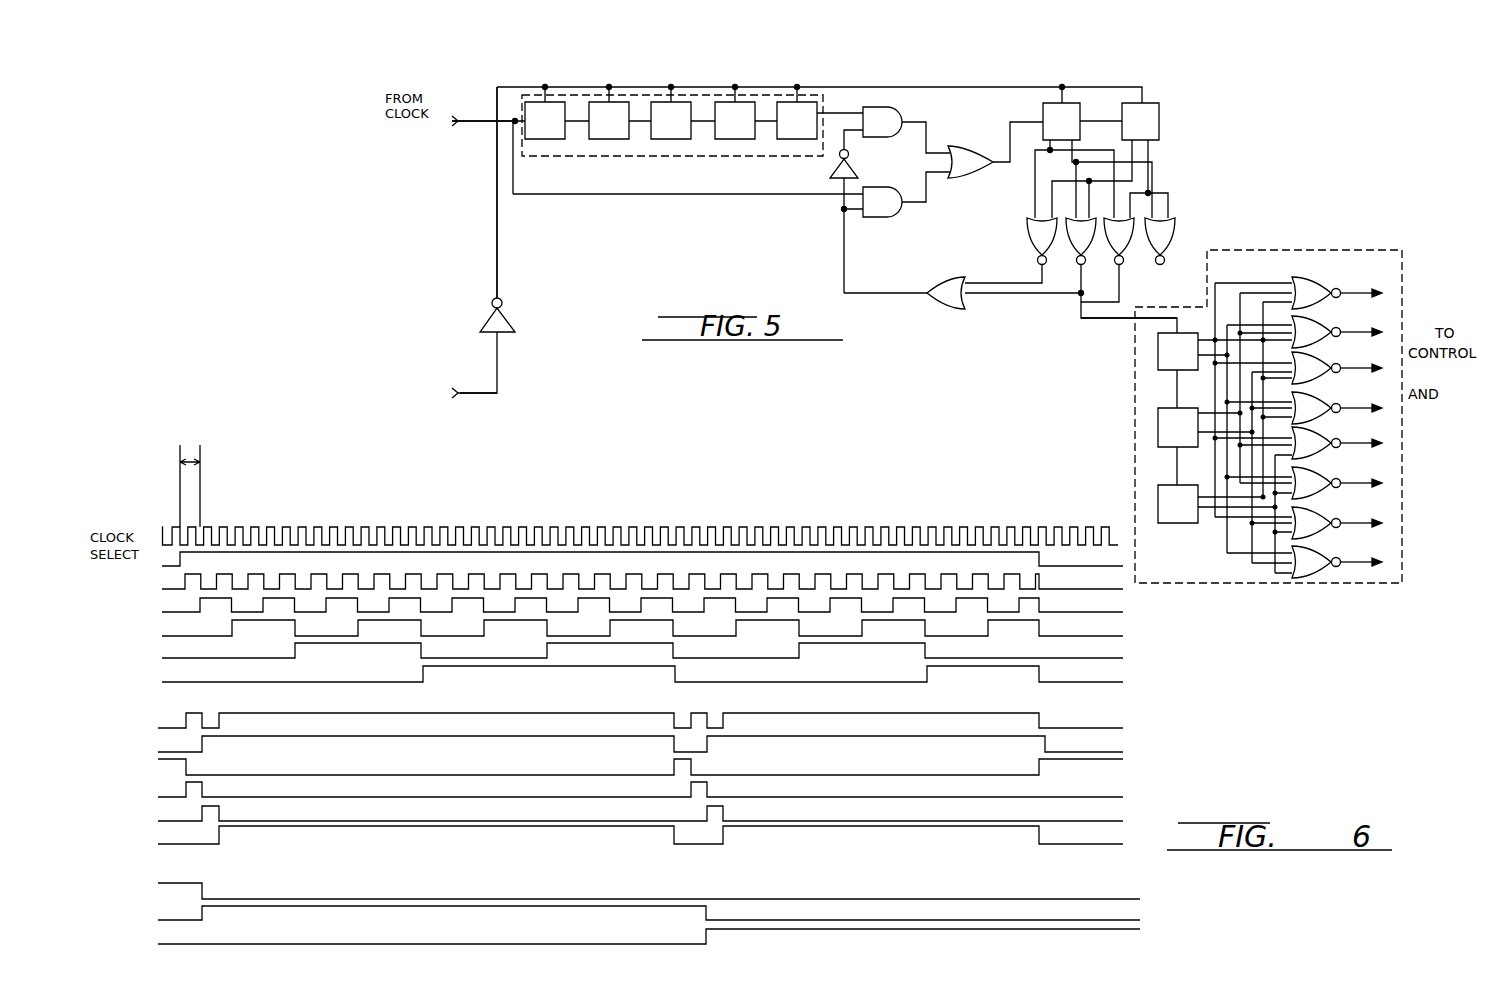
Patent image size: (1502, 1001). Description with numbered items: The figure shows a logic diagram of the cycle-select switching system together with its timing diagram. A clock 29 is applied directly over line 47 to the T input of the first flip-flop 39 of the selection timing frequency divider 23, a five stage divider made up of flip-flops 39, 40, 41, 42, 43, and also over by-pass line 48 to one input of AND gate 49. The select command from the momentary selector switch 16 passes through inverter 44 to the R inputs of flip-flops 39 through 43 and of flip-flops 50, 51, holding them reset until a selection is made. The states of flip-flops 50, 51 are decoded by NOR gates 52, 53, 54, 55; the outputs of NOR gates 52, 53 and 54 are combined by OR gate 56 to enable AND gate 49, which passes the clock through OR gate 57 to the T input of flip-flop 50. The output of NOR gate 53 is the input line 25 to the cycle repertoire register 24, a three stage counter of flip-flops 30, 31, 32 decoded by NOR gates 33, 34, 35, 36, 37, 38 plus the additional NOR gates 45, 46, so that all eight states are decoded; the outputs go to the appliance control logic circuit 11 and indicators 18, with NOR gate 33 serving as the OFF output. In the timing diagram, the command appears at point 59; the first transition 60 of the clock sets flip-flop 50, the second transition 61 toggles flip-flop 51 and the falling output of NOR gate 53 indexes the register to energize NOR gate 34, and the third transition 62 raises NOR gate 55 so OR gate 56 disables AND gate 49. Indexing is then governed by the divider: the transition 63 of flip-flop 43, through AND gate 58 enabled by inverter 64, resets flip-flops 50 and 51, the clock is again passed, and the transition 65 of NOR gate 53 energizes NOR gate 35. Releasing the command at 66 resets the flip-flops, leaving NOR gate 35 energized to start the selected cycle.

In FIG. 5, the appliance control logic circuit 11 is at (1449, 373).
In FIG. 5, the momentary selector switch 16 is at (372, 383).
In FIG. 5, the indicators 18 is at (1447, 426).
In FIG. 5, the selection timing frequency divider 23 is at (692, 158).
In FIG. 5, the cycle repertoire register 24 is at (1140, 553).
In FIG. 5, the output line 25 is at (1100, 319).
In FIG. 5, the clock 29 is at (482, 108).
In FIG. 5, the flip-flop 30 is at (1158, 360).
In FIG. 5, the flip-flop 31 is at (1158, 420).
In FIG. 5, the flip-flop 32 is at (1158, 495).
In FIG. 5, the NOR gate 33 is at (1312, 283).
In FIG. 6, the NOR gate 33 is at (635, 887).
In FIG. 5, the NOR gate 34 is at (1315, 323).
In FIG. 6, the NOR gate 34 is at (635, 912).
In FIG. 5, the NOR gate 35 is at (1315, 360).
In FIG. 6, the NOR gate 35 is at (635, 934).
In FIG. 5, the NOR gate 36 is at (1315, 398).
In FIG. 5, the NOR gate 37 is at (1315, 435).
In FIG. 5, the NOR gate 38 is at (1315, 473).
In FIG. 5, the flip-flop 39 is at (545, 141).
In FIG. 6, the flip-flop 39 is at (625, 576).
In FIG. 5, the flip-flop 40 is at (609, 141).
In FIG. 6, the flip-flop 40 is at (625, 600).
In FIG. 5, the flip-flop 41 is at (672, 141).
In FIG. 6, the flip-flop 41 is at (625, 624).
In FIG. 5, the flip-flop 42 is at (737, 141).
In FIG. 6, the flip-flop 42 is at (625, 647).
In FIG. 5, the flip-flop 43 is at (796, 141).
In FIG. 6, the flip-flop 43 is at (625, 670).
In FIG. 5, the inverter 44 is at (515, 325).
In FIG. 5, the NOR gate 45 is at (1315, 513).
In FIG. 5, the NOR gate 46 is at (1315, 552).
In FIG. 5, the line 47 is at (482, 126).
In FIG. 5, the by-pass line 48 is at (575, 196).
In FIG. 5, the AND gate 49 is at (878, 192).
In FIG. 5, the flip-flop 50 is at (1075, 103).
In FIG. 6, the flip-flop 50 is at (625, 717).
In FIG. 5, the flip-flop 51 is at (1159, 115).
In FIG. 6, the flip-flop 51 is at (625, 741).
In FIG. 5, the NOR gate 52 is at (1028, 236).
In FIG. 6, the NOR gate 52 is at (625, 764).
In FIG. 5, the NOR gate 53 is at (1088, 250).
In FIG. 6, the NOR gate 53 is at (625, 787).
In FIG. 5, the NOR gate 54 is at (1127, 250).
In FIG. 6, the NOR gate 54 is at (625, 810).
In FIG. 5, the NOR gate 55 is at (1168, 250).
In FIG. 6, the NOR gate 55 is at (625, 834).
In FIG. 5, the OR gate 56 is at (938, 283).
In FIG. 5, the OR gate 57 is at (962, 147).
In FIG. 5, the AND gate 58 is at (890, 106).
In FIG. 6, the point 59 is at (178, 558).
In FIG. 6, the first logical 1-0 transition 60 is at (180, 522).
In FIG. 6, the second logical 1-0 transition 61 is at (202, 526).
In FIG. 6, the third logical 1-0 transition 62 is at (218, 528).
In FIG. 6, the first logical 1-0 transition of flip-flop 43 63 is at (668, 672).
In FIG. 5, the inverter 64 is at (838, 182).
In FIG. 6, the logical 1-0 transition 65 is at (712, 786).
In FIG. 6, the termination of select command signal 66 is at (1040, 553).